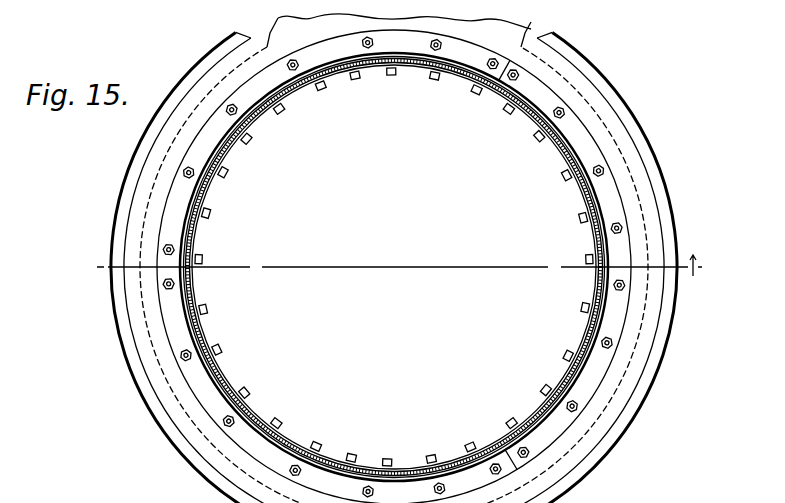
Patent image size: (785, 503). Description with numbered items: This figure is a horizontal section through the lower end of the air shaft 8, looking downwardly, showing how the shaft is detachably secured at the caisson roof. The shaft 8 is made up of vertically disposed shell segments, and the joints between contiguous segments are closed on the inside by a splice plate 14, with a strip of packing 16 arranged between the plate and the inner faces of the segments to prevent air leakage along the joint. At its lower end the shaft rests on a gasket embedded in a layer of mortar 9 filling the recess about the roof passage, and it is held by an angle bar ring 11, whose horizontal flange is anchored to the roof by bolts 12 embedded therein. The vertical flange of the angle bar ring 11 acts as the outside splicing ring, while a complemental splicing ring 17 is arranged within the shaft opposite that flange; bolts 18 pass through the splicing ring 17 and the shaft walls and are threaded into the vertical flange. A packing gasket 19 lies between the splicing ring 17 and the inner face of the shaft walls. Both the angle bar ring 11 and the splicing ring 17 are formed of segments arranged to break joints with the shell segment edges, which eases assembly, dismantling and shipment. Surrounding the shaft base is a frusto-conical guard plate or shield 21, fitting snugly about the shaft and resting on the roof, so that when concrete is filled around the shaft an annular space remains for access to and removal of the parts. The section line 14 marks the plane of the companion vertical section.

The shaft 8 is at (588, 333).
The layer of mortar 9 is at (627, 425).
The angle bar ring 11 is at (185, 290).
The bolts 12 is at (623, 226).
The splice plate 14 is at (396, 268).
The strip of packing 16 is at (614, 499).
The splicing ring 17 is at (593, 282).
The bolts 18 is at (394, 73).
The packing gasket 19 is at (596, 292).
The guard plate or shield 21 is at (138, 203).